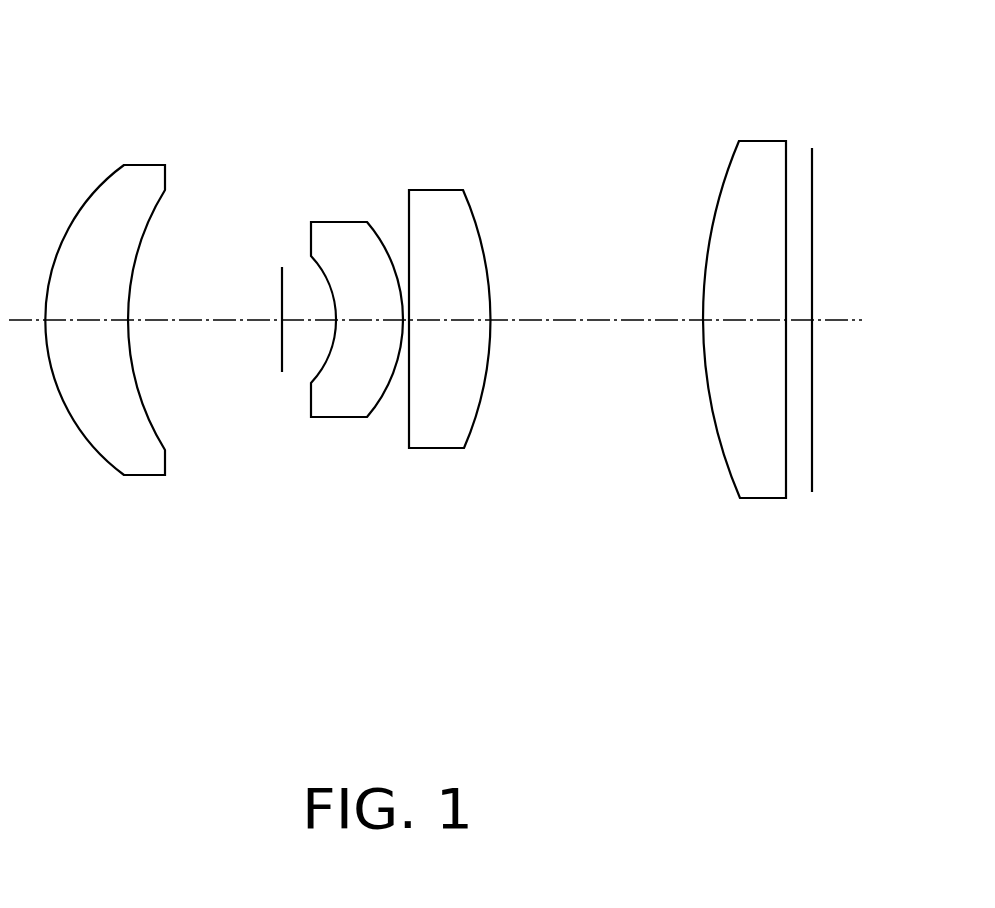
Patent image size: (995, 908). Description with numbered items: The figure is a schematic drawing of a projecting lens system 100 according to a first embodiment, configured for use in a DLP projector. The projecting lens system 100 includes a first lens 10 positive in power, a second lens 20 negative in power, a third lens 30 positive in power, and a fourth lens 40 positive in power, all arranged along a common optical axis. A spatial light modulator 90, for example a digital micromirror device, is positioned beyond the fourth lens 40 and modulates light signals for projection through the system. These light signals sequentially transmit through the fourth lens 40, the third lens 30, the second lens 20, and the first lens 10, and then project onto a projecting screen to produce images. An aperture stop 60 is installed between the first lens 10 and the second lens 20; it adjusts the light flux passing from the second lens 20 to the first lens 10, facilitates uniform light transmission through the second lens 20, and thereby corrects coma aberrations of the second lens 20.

The projecting lens system 100 is at (266, 79).
The first lens 10 is at (138, 457).
The aperture stop 60 is at (279, 350).
The second lens 20 is at (345, 410).
The third lens 30 is at (450, 440).
The fourth lens 40 is at (758, 488).
The spatial light modulator 90 is at (812, 464).